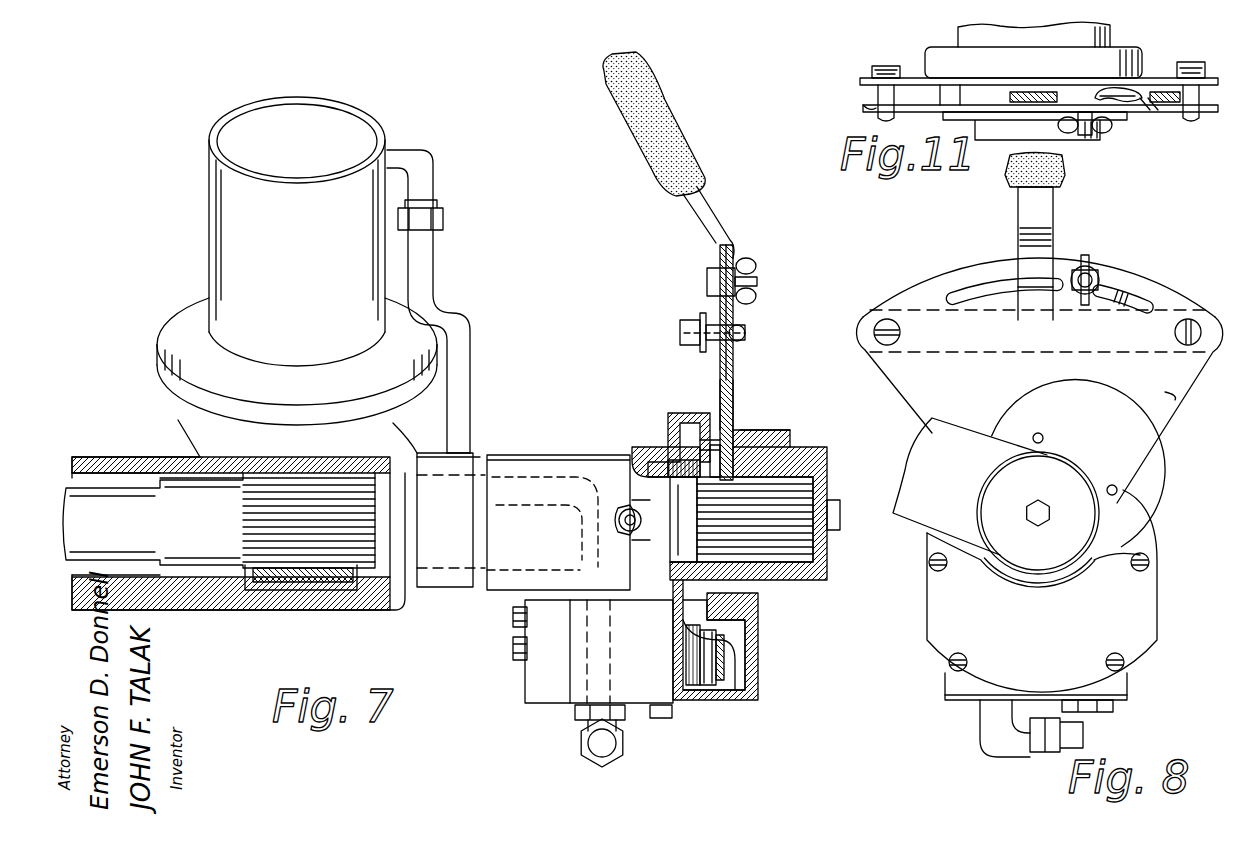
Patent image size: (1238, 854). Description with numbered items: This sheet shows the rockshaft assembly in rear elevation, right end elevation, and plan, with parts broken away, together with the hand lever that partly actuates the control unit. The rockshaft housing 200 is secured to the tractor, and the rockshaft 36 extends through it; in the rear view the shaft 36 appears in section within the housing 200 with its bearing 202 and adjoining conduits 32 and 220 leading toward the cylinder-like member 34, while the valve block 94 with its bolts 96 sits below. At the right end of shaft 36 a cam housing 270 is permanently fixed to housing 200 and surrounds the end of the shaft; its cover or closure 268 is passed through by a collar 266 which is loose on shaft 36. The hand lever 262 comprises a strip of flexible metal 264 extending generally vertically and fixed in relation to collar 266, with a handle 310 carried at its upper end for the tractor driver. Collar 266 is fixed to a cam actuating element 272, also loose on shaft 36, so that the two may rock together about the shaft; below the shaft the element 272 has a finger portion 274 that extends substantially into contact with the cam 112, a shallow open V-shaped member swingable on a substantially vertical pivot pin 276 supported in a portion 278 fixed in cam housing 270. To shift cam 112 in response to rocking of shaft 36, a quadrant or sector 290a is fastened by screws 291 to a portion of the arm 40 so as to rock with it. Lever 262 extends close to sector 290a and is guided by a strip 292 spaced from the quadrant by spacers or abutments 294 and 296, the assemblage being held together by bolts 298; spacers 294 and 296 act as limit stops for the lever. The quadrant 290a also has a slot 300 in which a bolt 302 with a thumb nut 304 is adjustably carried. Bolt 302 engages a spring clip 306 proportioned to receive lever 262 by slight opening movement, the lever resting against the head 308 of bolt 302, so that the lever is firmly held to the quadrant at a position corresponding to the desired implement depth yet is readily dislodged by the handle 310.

In FIG. 7, the conduit 32 is at (458, 432).
In FIG. 8, the conduit 32 is at (1083, 735).
In FIG. 7, the reservoir cylinder 34 is at (353, 135).
In FIG. 7, the rockshaft 36 is at (836, 482).
In FIG. 7, the arm 40 is at (782, 460).
In FIG. 8, the arm 40 is at (960, 442).
In FIG. 7, the valve block 94 is at (577, 686).
In FIG. 8, the valve block 94 is at (955, 690).
In FIG. 7, the bolts 96 is at (545, 657).
In FIG. 7, the cam 112 is at (686, 632).
In FIG. 7, the rockshaft housing 200 is at (218, 600).
In FIG. 11, the rockshaft housing 200 is at (960, 46).
In FIG. 7, the bearing 202 is at (307, 582).
In FIG. 7, the conduit 220 is at (412, 170).
In FIG. 7, the hand lever 262 is at (715, 206).
In FIG. 8, the hand lever 262 is at (1055, 230).
In FIG. 7, the strip of flexible metal 264 is at (726, 250).
In FIG. 8, the strip of flexible metal 264 is at (1018, 228).
In FIG. 11, the strip of flexible metal 264 is at (1040, 92).
In FIG. 7, the collar 266 is at (678, 450).
In FIG. 7, the cover or closure 268 is at (712, 405).
In FIG. 8, the cover or closure 268 is at (1135, 625).
In FIG. 7, the cam housing 270 is at (672, 425).
In FIG. 7, the cam actuating element 272 is at (688, 485).
In FIG. 7, the finger portion 274 is at (758, 655).
In FIG. 7, the pivot pin 276 is at (700, 655).
In FIG. 7, the portion 278 is at (690, 675).
In FIG. 7, the quadrant or sector 290a is at (735, 370).
In FIG. 8, the quadrant or sector 290a is at (1172, 398).
In FIG. 11, the quadrant or sector 290a is at (1196, 112).
In FIG. 7, the screws 291 is at (745, 447).
In FIG. 8, the screws 291 is at (1043, 435).
In FIG. 7, the strip 292 is at (706, 355).
In FIG. 11, the strip 292 is at (950, 85).
In FIG. 8, the spacer or abutment 294 is at (1196, 320).
In FIG. 11, the spacer or abutment 294 is at (865, 100).
In FIG. 11, the spacer or abutment 296 is at (1208, 78).
In FIG. 7, the bolts 298 is at (740, 333).
In FIG. 8, the bolts 298 is at (880, 322).
In FIG. 11, the bolts 298 is at (888, 66).
In FIG. 8, the slot 300 is at (963, 285).
In FIG. 8, the bolt 302 is at (1080, 268).
In FIG. 11, the bolt 302 is at (1087, 135).
In FIG. 8, the thumb nut 304 is at (1096, 270).
In FIG. 11, the thumb nut 304 is at (1108, 130).
In FIG. 8, the spring clip 306 is at (1120, 290).
In FIG. 11, the spring clip 306 is at (1140, 112).
In FIG. 11, the head 308 is at (1092, 92).
In FIG. 7, the handle 310 is at (672, 124).
In FIG. 8, the handle 310 is at (1007, 162).